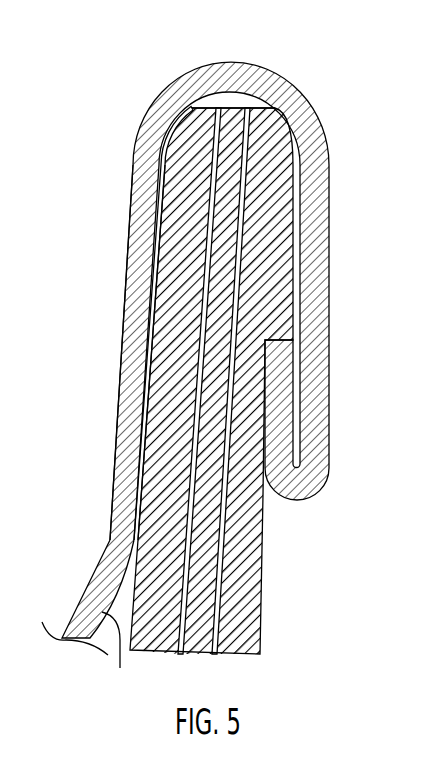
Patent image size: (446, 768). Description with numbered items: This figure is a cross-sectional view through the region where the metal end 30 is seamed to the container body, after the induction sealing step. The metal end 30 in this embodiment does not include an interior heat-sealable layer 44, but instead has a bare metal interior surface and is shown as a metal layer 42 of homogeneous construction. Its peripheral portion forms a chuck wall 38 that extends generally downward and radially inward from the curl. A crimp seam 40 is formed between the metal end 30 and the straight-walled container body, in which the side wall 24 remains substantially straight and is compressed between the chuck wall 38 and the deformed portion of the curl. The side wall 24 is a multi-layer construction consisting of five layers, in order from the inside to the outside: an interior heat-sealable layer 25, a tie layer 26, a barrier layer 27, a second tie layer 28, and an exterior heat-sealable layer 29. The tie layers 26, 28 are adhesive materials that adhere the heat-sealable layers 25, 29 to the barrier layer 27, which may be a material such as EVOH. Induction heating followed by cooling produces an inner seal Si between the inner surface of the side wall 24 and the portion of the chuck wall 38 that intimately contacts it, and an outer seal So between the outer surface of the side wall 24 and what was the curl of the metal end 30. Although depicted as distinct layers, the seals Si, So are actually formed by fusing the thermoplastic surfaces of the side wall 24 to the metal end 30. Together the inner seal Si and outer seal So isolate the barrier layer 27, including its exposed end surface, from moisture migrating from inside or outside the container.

The side wall 24 is at (233, 401).
The interior heat-sealable layer 25 is at (147, 634).
The tie layer 26 is at (186, 612).
The barrier layer 27 is at (197, 608).
The tie layer 28 is at (223, 527).
The exterior heat-sealable layer 29 is at (248, 547).
The metal end 30 is at (219, 360).
The chuck wall 38 is at (110, 393).
The crimp seam 40 is at (335, 260).
The metal layer 42 is at (107, 563).
The heat-sealable layer 44 is at (116, 652).
The inner seal Si is at (150, 265).
The outer seal So is at (283, 103).